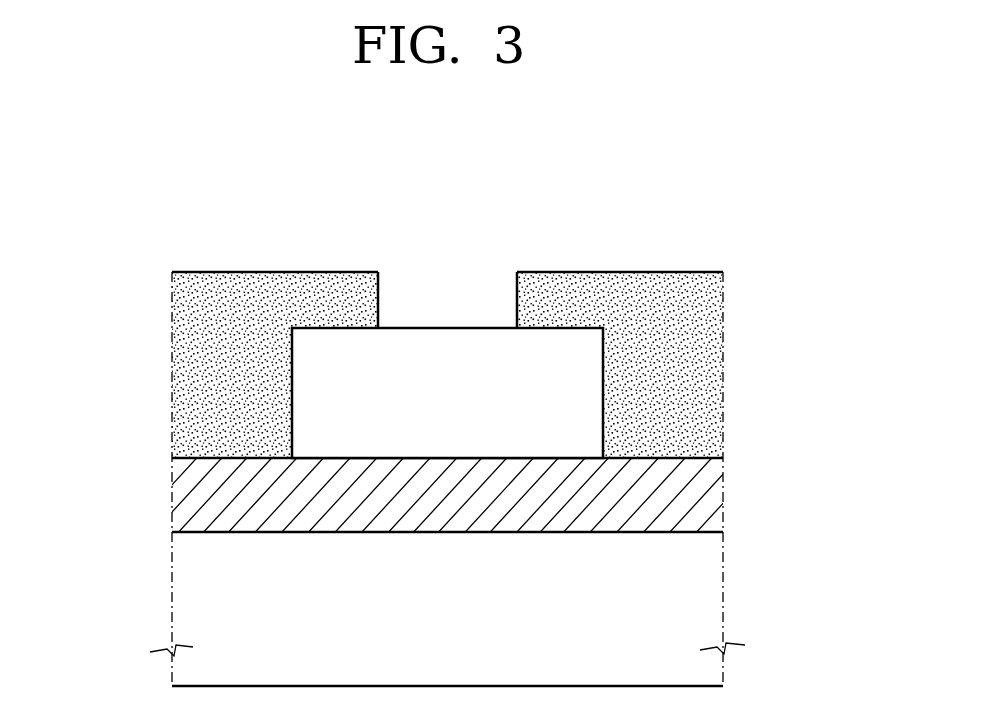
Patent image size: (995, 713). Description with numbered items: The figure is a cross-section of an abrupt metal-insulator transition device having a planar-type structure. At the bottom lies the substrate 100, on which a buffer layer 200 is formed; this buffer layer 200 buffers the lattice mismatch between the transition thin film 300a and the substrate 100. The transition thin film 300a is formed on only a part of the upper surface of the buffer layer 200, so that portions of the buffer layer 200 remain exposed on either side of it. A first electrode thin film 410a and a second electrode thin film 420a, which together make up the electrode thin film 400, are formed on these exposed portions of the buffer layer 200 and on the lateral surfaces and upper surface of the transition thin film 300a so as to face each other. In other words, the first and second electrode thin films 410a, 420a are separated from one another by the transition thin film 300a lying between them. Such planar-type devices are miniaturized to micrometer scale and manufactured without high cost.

The substrate 100 is at (710, 600).
The buffer layer 200 is at (712, 494).
The transition thin film 300a is at (592, 400).
The electrode thin film 400 is at (555, 193).
The first electrode thin film 410a is at (330, 285).
The second electrode thin film 420a is at (555, 283).